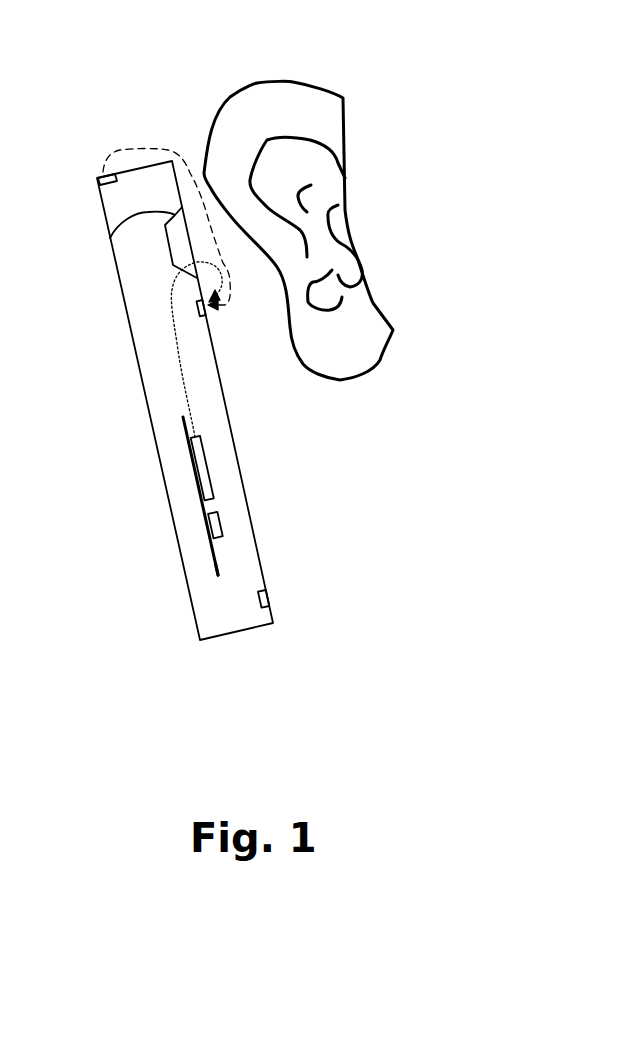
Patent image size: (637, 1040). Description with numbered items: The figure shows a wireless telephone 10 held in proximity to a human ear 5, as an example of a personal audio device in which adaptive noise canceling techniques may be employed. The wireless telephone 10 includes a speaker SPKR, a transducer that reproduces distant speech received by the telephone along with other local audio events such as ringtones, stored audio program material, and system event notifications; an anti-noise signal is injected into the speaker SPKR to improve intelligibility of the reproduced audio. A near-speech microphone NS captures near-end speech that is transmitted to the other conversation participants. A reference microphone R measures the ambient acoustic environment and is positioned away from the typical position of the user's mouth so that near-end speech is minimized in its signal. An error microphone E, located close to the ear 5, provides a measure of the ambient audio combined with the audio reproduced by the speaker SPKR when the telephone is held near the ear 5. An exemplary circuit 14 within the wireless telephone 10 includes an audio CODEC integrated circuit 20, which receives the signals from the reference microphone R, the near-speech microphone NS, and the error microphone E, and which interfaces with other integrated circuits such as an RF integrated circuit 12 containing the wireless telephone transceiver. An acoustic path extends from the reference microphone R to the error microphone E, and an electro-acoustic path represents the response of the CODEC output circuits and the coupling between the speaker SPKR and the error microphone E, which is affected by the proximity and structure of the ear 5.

The human ear 5 is at (293, 80).
The wireless telephone 10 is at (181, 553).
The RF integrated circuit 12 is at (222, 517).
The circuit 14 is at (218, 576).
The audio CODEC integrated circuit 20 is at (184, 452).
The reference microphone R is at (108, 187).
The speaker SPKR is at (128, 219).
The error microphone E is at (196, 312).
The near-speech microphone NS is at (268, 597).